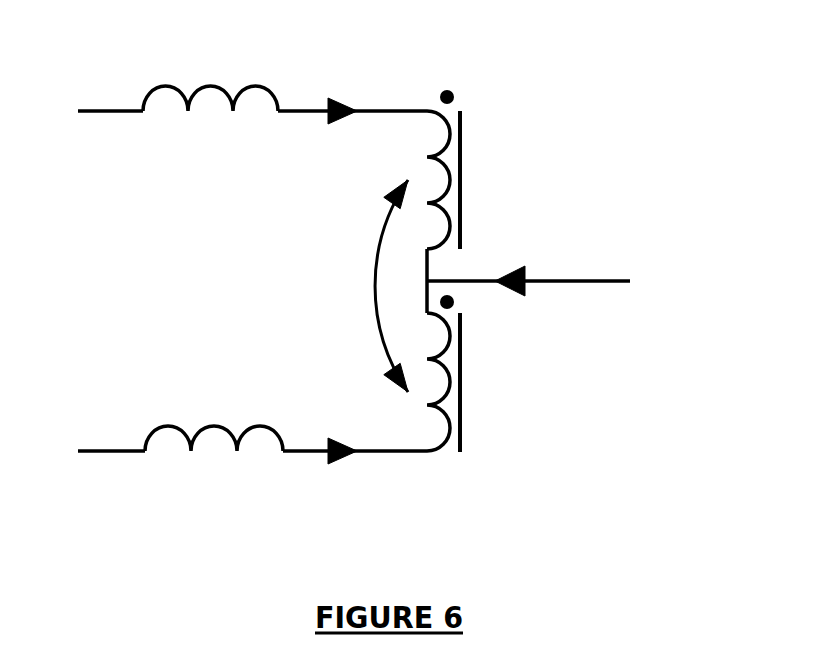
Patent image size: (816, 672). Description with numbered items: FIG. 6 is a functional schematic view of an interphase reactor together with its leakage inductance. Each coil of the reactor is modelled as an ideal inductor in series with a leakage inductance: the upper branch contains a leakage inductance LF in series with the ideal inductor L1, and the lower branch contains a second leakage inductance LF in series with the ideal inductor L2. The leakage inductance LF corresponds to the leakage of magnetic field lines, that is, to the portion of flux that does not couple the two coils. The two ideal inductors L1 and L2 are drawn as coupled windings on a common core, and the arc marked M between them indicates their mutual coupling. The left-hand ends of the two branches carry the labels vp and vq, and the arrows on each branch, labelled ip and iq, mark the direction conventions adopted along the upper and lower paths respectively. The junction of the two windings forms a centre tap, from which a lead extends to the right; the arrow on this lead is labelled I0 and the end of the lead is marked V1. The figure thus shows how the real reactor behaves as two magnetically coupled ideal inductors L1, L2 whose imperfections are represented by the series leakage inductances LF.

The transformed phase voltage v'p input vp is at (53, 82).
The transformed phase voltage v'q input vq is at (59, 420).
The leakage inductance LF is at (285, 234).
The transformed current i'p ip is at (342, 30).
The transformed current i'q iq is at (360, 368).
The ideal inductor L1 is at (520, 152).
The ideal inductor L2 is at (514, 358).
The mutual inductance M between windings M is at (366, 286).
The center-tap current I0 is at (523, 260).
The center-tap voltage V1 terminal V1 is at (562, 289).